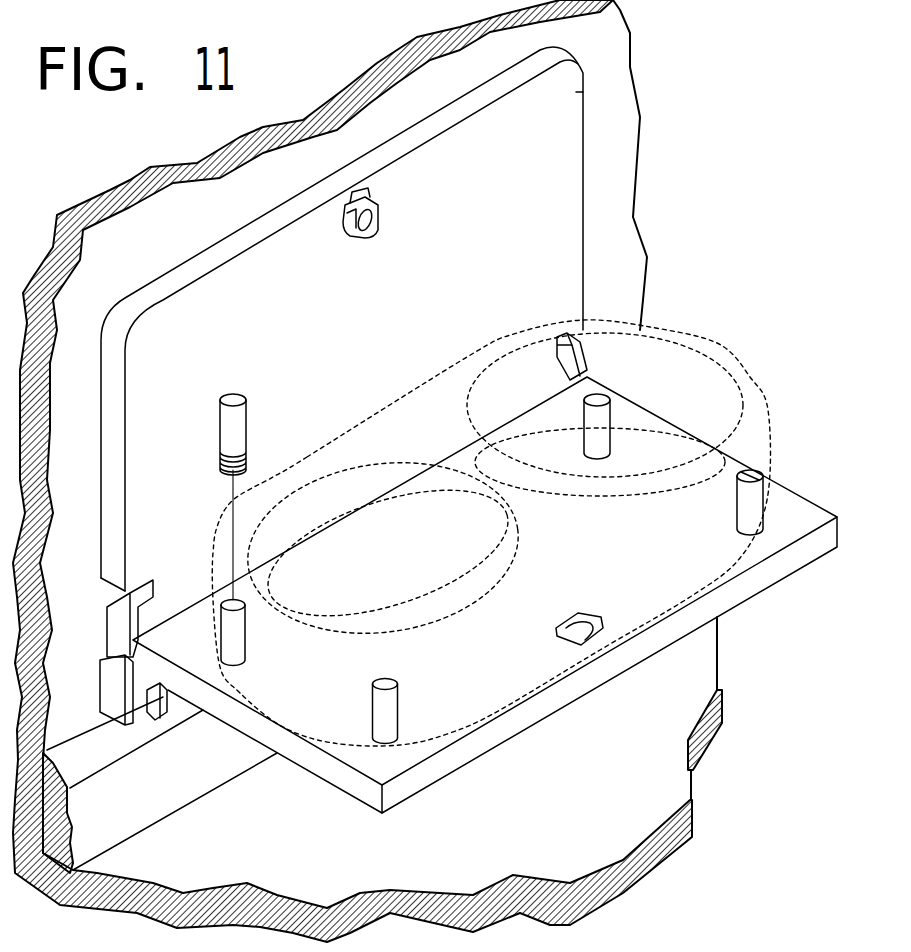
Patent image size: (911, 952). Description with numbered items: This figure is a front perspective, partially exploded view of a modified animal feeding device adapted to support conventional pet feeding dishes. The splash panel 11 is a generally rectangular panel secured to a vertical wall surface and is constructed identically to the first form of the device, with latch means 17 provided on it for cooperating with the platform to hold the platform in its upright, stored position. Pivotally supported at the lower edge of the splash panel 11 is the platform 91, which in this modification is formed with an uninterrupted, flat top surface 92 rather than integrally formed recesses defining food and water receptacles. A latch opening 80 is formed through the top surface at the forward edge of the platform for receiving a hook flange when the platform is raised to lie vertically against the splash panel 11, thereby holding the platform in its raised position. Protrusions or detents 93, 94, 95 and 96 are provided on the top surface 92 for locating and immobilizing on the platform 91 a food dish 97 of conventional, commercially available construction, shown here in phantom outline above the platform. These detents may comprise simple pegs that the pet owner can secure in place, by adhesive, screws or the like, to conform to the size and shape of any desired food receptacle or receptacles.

The splash panel 11 is at (588, 140).
The latch means 17 is at (382, 206).
The latch opening 80 is at (601, 612).
The platform 91 is at (493, 556).
The top surface 92 is at (385, 763).
The detent 93 is at (237, 630).
The detent 94 is at (388, 713).
The detent 95 is at (743, 507).
The detent 96 is at (607, 413).
The food dish 97 is at (767, 400).